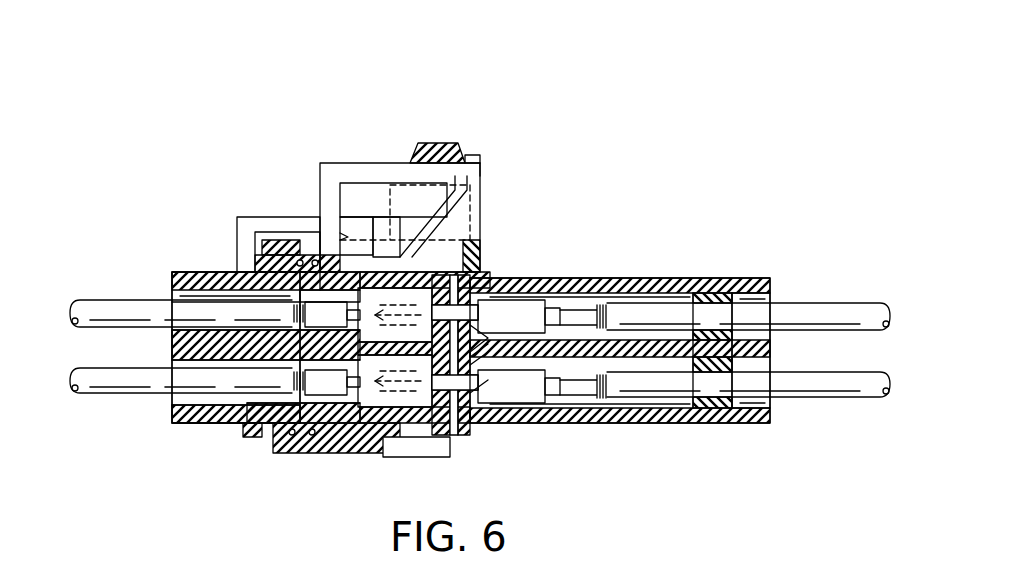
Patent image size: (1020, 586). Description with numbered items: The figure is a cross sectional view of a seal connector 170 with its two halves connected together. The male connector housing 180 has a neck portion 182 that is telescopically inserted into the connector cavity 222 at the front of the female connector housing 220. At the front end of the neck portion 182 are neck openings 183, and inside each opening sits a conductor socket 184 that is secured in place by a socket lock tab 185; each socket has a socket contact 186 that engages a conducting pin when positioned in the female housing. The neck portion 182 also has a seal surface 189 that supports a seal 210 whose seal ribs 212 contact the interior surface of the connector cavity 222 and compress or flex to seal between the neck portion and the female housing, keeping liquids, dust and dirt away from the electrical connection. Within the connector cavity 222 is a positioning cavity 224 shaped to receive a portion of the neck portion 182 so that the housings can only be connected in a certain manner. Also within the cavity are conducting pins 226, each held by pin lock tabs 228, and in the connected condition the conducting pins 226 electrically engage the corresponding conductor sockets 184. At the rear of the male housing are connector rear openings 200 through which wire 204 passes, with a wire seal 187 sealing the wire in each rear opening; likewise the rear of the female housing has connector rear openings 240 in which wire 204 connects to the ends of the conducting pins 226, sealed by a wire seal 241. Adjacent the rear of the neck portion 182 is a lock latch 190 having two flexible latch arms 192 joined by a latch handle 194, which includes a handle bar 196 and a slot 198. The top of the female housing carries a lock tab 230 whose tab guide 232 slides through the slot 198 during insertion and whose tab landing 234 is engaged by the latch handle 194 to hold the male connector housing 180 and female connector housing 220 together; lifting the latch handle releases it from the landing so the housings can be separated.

The seal connector 170 is at (447, 118).
The male connector housing 180 is at (180, 248).
The neck portion 182 is at (485, 280).
The neck openings 183 is at (498, 283).
The conductor socket 184 is at (428, 418).
The socket lock tab 185 is at (360, 418).
The socket contact 186 is at (453, 392).
The wire seal 187 is at (228, 290).
The seal surface 189 is at (285, 272).
The lock latch 190 is at (424, 132).
The latch arms 192 is at (263, 213).
The latch handle 194 is at (383, 165).
The handle bar 196 is at (467, 148).
The slot 198 is at (423, 193).
The connector rear openings 200 is at (173, 293).
The wire 204 is at (92, 307).
The seal 210 is at (305, 262).
The seal ribs 212 is at (322, 258).
The female connector housing 220 is at (664, 264).
The connector cavity 222 is at (297, 430).
The positioning cavity 224 is at (465, 390).
The conducting pins 226 is at (523, 282).
The pin lock tabs 228 is at (550, 405).
The lock tab 230 is at (455, 178).
The tab guide 232 is at (387, 163).
The tab landing 234 is at (380, 258).
The connector rear openings 240 is at (765, 300).
The wire seal 241 is at (713, 297).